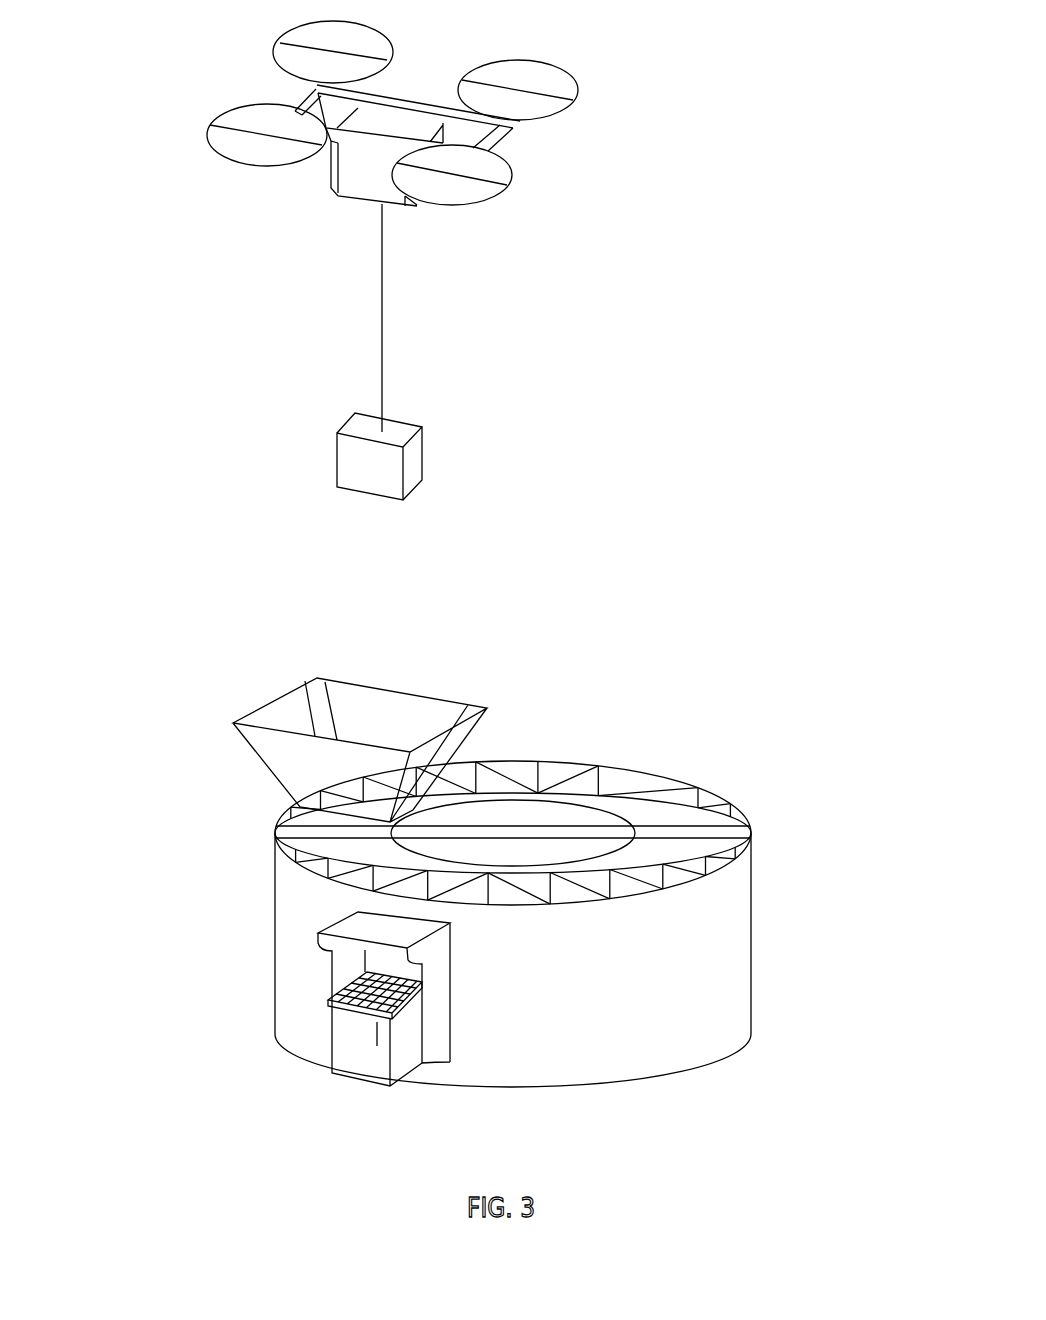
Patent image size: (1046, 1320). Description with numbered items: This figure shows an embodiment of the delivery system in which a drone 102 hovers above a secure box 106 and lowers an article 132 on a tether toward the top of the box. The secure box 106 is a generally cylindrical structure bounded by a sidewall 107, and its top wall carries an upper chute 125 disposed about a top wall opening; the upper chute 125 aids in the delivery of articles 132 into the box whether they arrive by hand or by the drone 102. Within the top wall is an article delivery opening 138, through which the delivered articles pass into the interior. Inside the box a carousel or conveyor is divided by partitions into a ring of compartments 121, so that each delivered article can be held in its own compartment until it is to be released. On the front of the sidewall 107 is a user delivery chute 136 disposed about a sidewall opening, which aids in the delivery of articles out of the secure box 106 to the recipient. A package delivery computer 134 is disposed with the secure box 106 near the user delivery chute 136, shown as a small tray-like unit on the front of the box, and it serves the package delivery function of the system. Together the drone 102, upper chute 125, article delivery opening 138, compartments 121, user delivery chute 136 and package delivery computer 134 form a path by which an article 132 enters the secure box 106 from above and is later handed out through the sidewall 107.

The drone 102 is at (365, 183).
The articles 132 is at (397, 434).
The upper chute 125 is at (285, 717).
The secure box 106 is at (733, 788).
The sidewall 107 is at (693, 972).
The article delivery opening 138 is at (623, 793).
The compartments 121 is at (348, 868).
The user delivery chute 136 is at (368, 1068).
The package delivery computer 134 is at (358, 993).